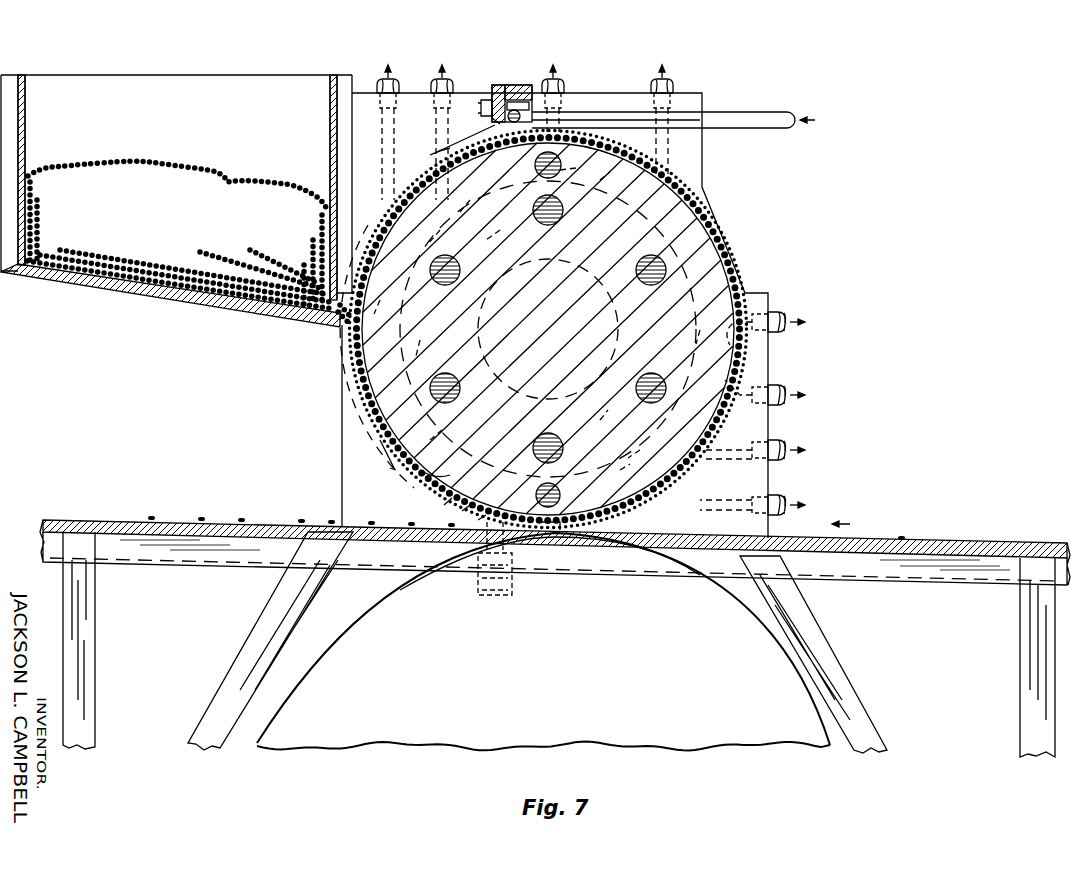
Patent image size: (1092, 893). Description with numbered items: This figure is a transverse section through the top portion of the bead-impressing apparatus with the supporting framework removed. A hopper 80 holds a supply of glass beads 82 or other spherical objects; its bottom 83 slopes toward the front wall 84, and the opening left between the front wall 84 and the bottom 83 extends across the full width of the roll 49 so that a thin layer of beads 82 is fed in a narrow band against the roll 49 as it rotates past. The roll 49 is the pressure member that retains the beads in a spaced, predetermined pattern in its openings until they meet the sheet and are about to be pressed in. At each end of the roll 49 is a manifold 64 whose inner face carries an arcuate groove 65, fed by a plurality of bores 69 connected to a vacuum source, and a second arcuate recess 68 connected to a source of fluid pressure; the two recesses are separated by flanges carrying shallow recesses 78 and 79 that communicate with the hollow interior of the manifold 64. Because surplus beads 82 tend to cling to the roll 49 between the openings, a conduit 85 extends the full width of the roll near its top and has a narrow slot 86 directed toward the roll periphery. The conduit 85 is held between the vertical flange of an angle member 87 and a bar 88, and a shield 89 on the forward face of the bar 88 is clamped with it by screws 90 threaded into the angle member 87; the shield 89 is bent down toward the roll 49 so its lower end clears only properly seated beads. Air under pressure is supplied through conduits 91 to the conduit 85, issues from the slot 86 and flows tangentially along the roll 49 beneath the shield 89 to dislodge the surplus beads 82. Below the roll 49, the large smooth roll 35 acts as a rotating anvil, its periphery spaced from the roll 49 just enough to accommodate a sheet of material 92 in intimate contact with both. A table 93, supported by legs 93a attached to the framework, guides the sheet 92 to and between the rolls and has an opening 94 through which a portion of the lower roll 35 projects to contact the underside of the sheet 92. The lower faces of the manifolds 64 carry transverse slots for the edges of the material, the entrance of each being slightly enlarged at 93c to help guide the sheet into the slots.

The hopper 80 is at (27, 97).
The glass beads 82 is at (222, 176).
The front wall 84 is at (330, 150).
The bottom 83 is at (163, 302).
The shield 89 is at (438, 152).
The conduit 85 is at (492, 114).
The slot 86 is at (493, 127).
The screws 90 is at (486, 103).
The bar 88 is at (508, 86).
The angle member 87 is at (530, 86).
The conduits 91 is at (780, 114).
The manifolds 64 is at (705, 191).
The roll 49 is at (722, 244).
The arcuate groove 65 is at (738, 271).
The bores 69 is at (775, 352).
The shallow recess 78 is at (400, 473).
The recess 68 is at (425, 490).
The shallow recess 79 is at (562, 528).
The opening 94 is at (393, 571).
The sheet of material 92 is at (230, 520).
The table 93 is at (115, 520).
The legs 93a is at (93, 666).
The enlarged entrance 93c is at (768, 534).
The roll 35 is at (735, 746).